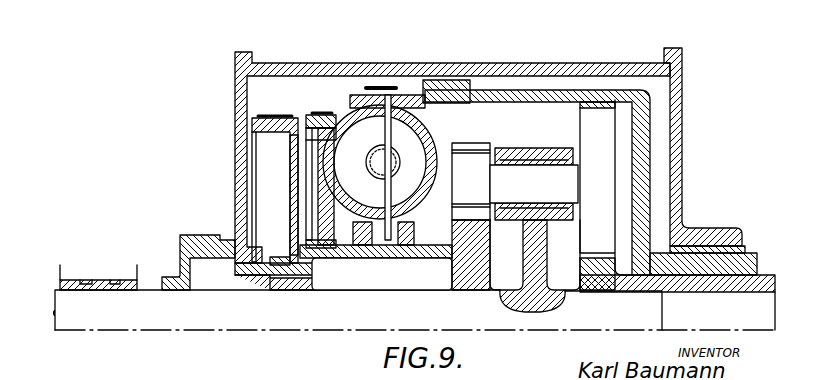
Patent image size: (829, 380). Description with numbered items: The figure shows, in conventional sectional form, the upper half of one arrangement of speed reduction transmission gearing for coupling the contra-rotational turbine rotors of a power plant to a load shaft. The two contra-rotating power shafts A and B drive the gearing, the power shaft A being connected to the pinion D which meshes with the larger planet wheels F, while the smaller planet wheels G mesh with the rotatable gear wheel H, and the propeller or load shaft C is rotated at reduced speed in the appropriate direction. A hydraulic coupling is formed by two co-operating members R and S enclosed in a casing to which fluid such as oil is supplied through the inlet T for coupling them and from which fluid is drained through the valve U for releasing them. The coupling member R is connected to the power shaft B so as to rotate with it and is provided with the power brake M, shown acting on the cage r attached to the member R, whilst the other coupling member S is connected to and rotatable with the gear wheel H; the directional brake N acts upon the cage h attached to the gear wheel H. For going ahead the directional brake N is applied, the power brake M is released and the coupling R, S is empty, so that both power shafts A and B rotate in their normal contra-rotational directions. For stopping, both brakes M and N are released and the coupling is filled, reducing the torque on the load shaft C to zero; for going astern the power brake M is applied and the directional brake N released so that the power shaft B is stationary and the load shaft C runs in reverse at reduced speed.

The power shaft A is at (712, 288).
The power shaft B is at (749, 252).
The load shaft C is at (353, 321).
The pinion D is at (582, 254).
The larger planet wheels F is at (590, 138).
The smaller planet wheels G is at (480, 162).
The gear wheel H is at (486, 258).
The power brake M is at (321, 170).
The directional brake N is at (275, 179).
The co-operating member of hydraulic coupling R is at (420, 171).
The co-operating coupling member S is at (362, 171).
The inlet T is at (203, 244).
The valve U is at (375, 83).
The cage h is at (294, 198).
The cage r is at (314, 132).